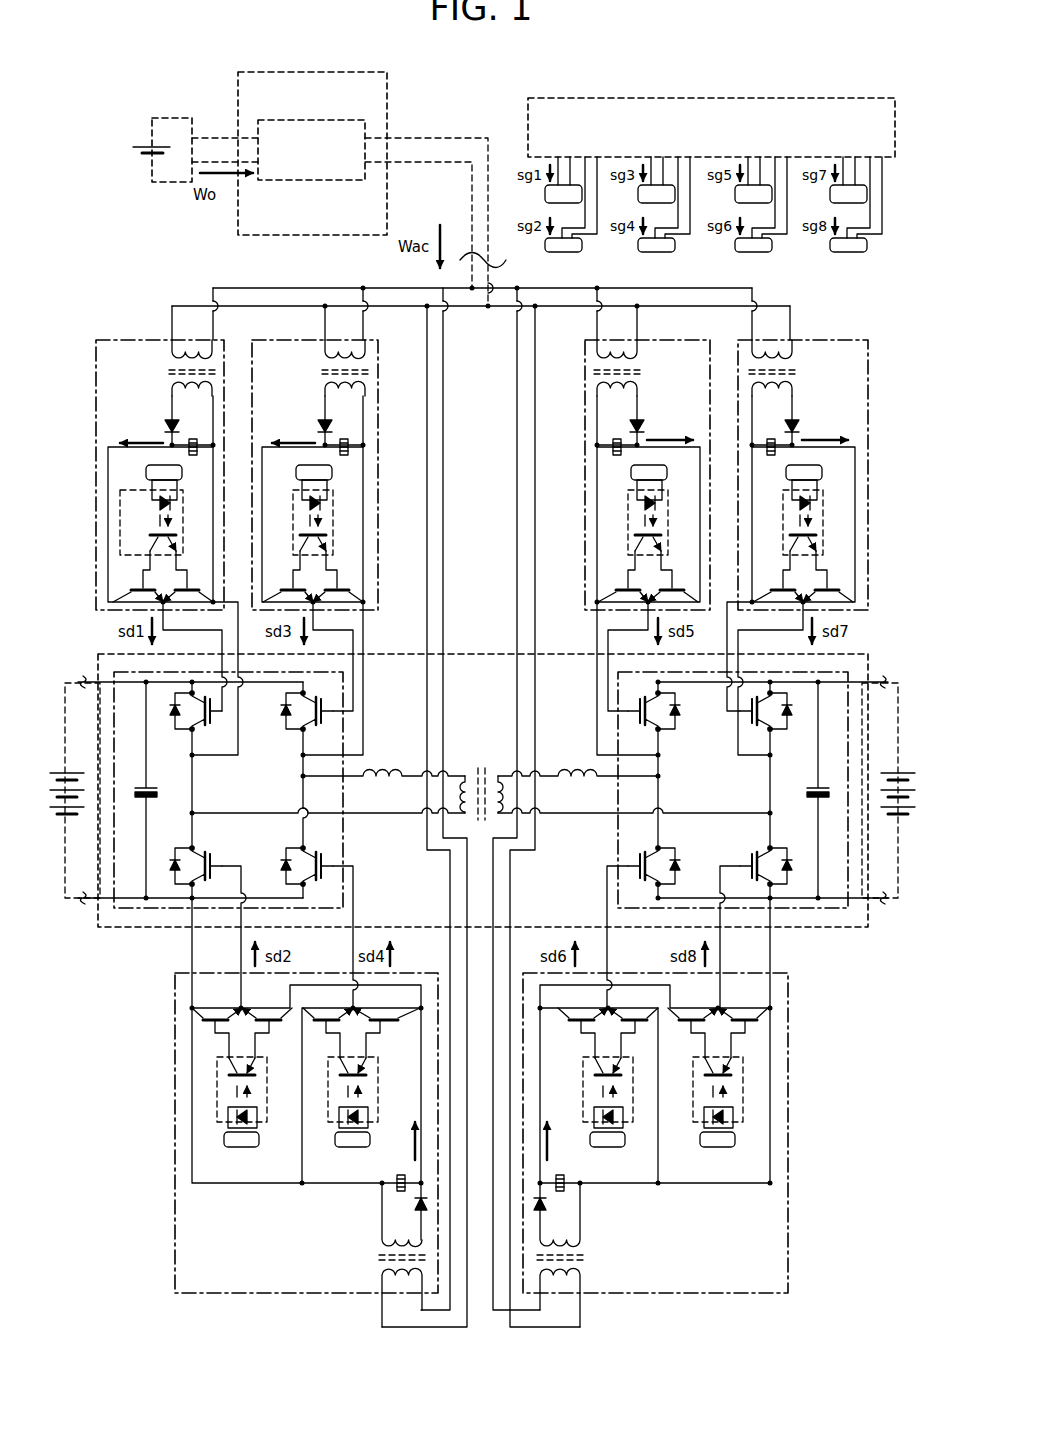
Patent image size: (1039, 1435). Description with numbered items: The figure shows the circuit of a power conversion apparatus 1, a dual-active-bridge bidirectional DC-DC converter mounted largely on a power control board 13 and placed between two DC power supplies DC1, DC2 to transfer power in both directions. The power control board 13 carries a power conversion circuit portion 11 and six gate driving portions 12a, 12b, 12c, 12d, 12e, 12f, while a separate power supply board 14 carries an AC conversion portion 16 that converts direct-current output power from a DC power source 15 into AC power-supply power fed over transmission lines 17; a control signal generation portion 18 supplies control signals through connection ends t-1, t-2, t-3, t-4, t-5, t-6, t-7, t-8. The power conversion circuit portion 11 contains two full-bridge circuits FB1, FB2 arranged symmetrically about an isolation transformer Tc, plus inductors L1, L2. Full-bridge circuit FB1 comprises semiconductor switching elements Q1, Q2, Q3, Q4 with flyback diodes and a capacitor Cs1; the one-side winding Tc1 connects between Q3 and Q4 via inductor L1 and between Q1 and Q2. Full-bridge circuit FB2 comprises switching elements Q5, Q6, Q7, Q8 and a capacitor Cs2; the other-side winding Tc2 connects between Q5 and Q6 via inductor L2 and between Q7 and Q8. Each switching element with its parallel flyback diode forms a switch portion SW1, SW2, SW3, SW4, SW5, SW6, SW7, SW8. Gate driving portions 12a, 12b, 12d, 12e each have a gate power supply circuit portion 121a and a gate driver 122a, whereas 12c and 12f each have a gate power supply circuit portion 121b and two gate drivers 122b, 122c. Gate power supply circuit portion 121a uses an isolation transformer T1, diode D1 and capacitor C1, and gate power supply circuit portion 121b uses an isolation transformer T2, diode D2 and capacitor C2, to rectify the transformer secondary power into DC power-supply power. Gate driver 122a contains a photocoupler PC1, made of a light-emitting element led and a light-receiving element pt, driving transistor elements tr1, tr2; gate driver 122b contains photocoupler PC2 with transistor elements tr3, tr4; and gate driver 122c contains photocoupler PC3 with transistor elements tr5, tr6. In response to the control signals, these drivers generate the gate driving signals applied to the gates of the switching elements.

The power conversion apparatus 1 is at (558, 65).
The power conversion circuit portion 11 is at (484, 652).
The power control board 13 is at (497, 387).
The power supply board 14 is at (283, 153).
The DC power source 15 is at (150, 165).
The AC conversion portion 16 is at (300, 182).
The transmission lines 17 is at (447, 128).
The control signal generation portion 18 is at (528, 118).
The gate driving portion 12a is at (126, 474).
The gate driving portion 12b is at (334, 471).
The gate driving portion 12c is at (273, 1112).
The gate driving portion 12d is at (630, 472).
The gate driving portion 12e is at (822, 471).
The gate driving portion 12f is at (612, 1148).
The gate power supply circuit portion 121a is at (123, 471).
The gate power supply circuit portion 121b is at (353, 1244).
The gate driver 122a is at (146, 470).
The gate driver 122b is at (357, 1077).
The gate driver 122c is at (200, 1095).
The isolation transformer T1 is at (166, 372).
The isolation transformer T2 is at (376, 1258).
The diode D1 is at (185, 420).
The diode D2 is at (408, 1211).
The capacitor C1 is at (191, 463).
The capacitor C2 is at (391, 1176).
The photocoupler PC1 is at (112, 518).
The photocoupler PC2 is at (329, 1122).
The photocoupler PC3 is at (218, 1122).
The light-emitting element led is at (149, 503).
The light-receiving element pt is at (158, 560).
The transistor element tr1 is at (138, 590).
The transistor element tr2 is at (188, 590).
The transistor element tr3 is at (386, 1028).
The transistor element tr4 is at (328, 1028).
The transistor element tr5 is at (268, 1028).
The transistor element tr6 is at (217, 1028).
The connection end t-1 is at (546, 198).
The connection end t-2 is at (570, 253).
The connection end t-3 is at (638, 197).
The connection end t-4 is at (657, 261).
The connection end t-5 is at (735, 197).
The connection end t-6 is at (754, 261).
The connection end t-7 is at (830, 197).
The connection end t-8 is at (848, 261).
The semiconductor switching element Q1 is at (178, 762).
The semiconductor switching element Q2 is at (200, 872).
The semiconductor switching element Q3 is at (285, 762).
The semiconductor switching element Q4 is at (308, 868).
The semiconductor switching element Q5 is at (690, 760).
The semiconductor switching element Q6 is at (690, 837).
The semiconductor switching element Q7 is at (795, 760).
The semiconductor switching element Q8 is at (795, 822).
The switch portion SW1 is at (186, 732).
The switch portion SW2 is at (190, 851).
The switch portion SW3 is at (295, 732).
The switch portion SW4 is at (275, 863).
The switch portion SW5 is at (665, 732).
The switch portion SW6 is at (676, 863).
The switch portion SW7 is at (770, 732).
The switch portion SW8 is at (772, 993).
The capacitor Cs1 is at (137, 790).
The capacitor Cs2 is at (828, 790).
The DC power supply DC1 is at (56, 766).
The DC power supply DC2 is at (908, 766).
The full-bridge circuit FB1 is at (256, 790).
The full-bridge circuit FB2 is at (702, 927).
The inductor L1 is at (378, 768).
The inductor L2 is at (572, 768).
The isolation transformer Tc is at (481, 743).
The one-side winding Tc1 is at (465, 768).
The other-side winding Tc2 is at (498, 768).